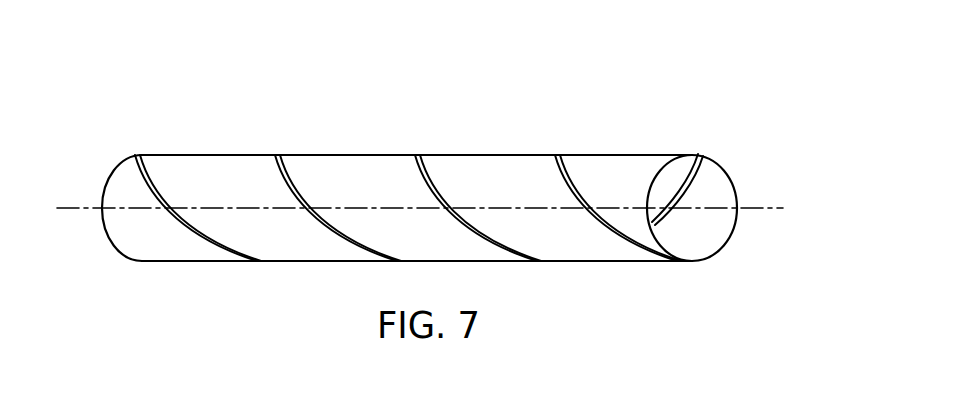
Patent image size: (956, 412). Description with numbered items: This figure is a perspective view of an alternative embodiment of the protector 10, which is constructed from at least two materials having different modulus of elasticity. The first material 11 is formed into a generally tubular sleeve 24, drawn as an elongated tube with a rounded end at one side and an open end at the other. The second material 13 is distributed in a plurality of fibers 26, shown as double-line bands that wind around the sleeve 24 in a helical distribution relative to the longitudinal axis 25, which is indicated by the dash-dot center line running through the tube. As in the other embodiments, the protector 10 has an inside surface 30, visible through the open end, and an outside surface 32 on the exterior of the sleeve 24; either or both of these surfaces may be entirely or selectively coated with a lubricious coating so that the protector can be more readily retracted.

The protector 10 is at (217, 151).
The first material 11 is at (293, 247).
The second material 13 is at (303, 192).
The tubular sleeve 24 is at (127, 172).
The longitudinal axis 25 is at (757, 194).
The fibers 26 is at (448, 178).
The inside surface 30 is at (718, 233).
The outside surface 32 is at (597, 168).